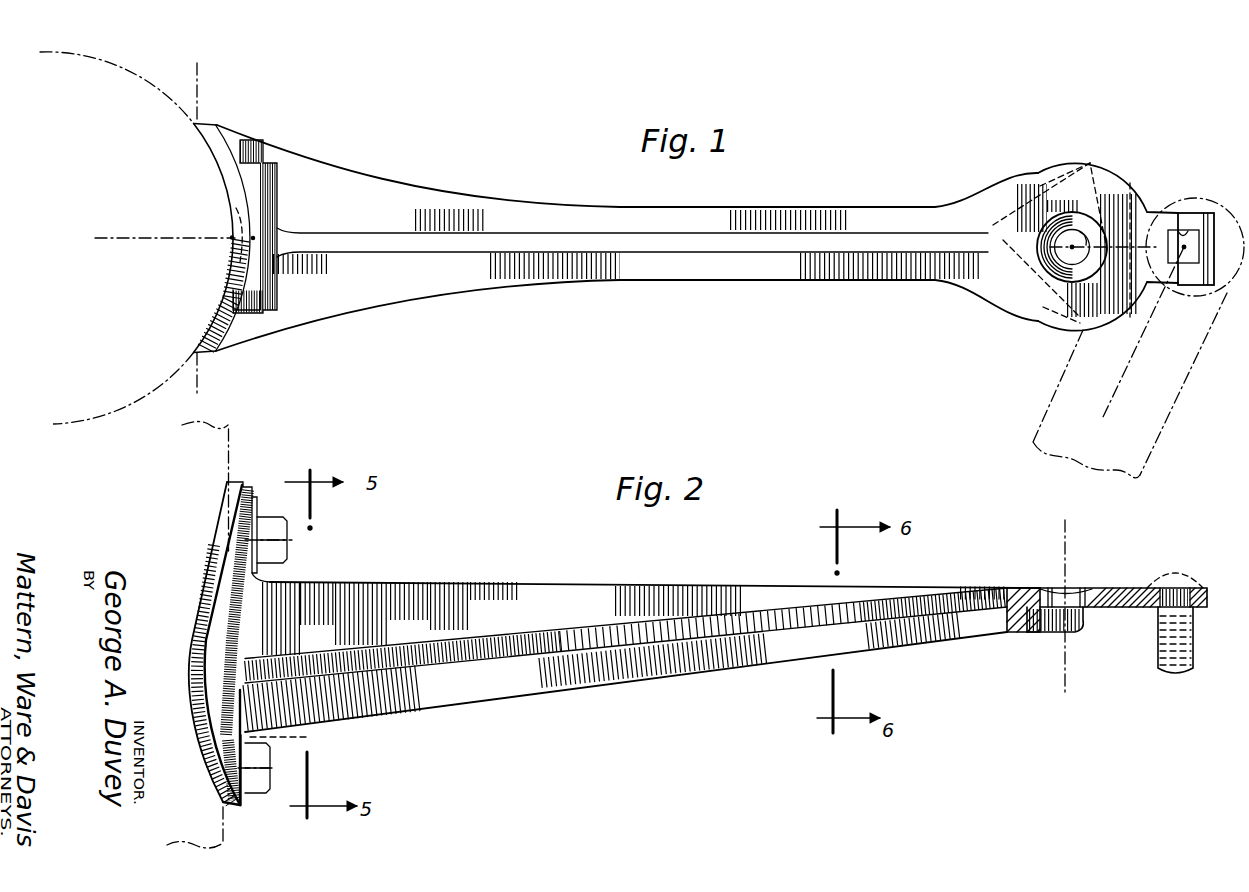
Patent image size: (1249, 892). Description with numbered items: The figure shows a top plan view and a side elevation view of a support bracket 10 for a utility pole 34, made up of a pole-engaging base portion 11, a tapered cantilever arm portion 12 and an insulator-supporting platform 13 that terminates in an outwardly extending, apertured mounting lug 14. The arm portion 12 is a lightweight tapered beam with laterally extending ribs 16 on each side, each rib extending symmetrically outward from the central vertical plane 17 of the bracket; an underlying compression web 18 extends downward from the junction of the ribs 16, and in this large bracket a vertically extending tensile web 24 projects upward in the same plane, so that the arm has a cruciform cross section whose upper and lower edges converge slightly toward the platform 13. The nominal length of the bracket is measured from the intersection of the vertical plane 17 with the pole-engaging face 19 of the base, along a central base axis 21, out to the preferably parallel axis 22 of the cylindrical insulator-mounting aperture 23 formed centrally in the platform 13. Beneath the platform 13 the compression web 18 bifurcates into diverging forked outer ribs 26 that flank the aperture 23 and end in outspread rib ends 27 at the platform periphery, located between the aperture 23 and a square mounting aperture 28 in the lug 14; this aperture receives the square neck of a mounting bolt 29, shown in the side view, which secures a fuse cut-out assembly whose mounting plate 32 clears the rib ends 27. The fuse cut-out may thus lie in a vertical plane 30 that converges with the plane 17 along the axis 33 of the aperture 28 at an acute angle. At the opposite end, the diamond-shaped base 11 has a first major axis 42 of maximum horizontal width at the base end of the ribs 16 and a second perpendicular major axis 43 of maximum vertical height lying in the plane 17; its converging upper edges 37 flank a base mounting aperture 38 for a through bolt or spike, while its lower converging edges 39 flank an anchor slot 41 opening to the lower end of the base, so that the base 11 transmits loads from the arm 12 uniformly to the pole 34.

In FIG. 1, the support bracket 10 is at (852, 197).
In FIG. 2, the support bracket 10 is at (477, 576).
In FIG. 1, the pole-engaging base portion 11 is at (242, 150).
In FIG. 2, the pole-engaging base portion 11 is at (208, 545).
In FIG. 1, the cantilever arm portion 12 is at (710, 286).
In FIG. 2, the cantilever arm portion 12 is at (757, 604).
In FIG. 1, the insulator-supporting platform 13 is at (1140, 180).
In FIG. 1, the mounting lug 14 is at (1220, 221).
In FIG. 2, the mounting lug 14 is at (1213, 602).
In FIG. 1, the laterally extending ribs 16 is at (383, 193).
In FIG. 2, the laterally extending ribs 16 is at (532, 640).
In FIG. 1, the central vertical plane 17 is at (106, 232).
In FIG. 2, the compression web 18 is at (482, 690).
In FIG. 1, the pole-engaging face 19 is at (218, 176).
In FIG. 2, the pole-engaging face 19 is at (224, 510).
In FIG. 1, the central base axis 21 is at (232, 239).
In FIG. 2, the central base axis 21 is at (240, 439).
In FIG. 1, the axis of insulator-mounting aperture 22 is at (1068, 252).
In FIG. 2, the axis of insulator-mounting aperture 22 is at (1061, 537).
In FIG. 1, the insulator-mounting aperture 23 is at (1078, 242).
In FIG. 2, the insulator-mounting aperture 23 is at (1080, 630).
In FIG. 1, the tensile web 24 is at (560, 234).
In FIG. 2, the tensile web 24 is at (602, 600).
In FIG. 1, the forked outer ribs 26 is at (1043, 183).
In FIG. 2, the forked outer ribs 26 is at (1040, 625).
In FIG. 1, the rib ends 27 is at (1093, 168).
In FIG. 2, the rib ends 27 is at (1086, 623).
In FIG. 1, the mounting aperture 28 is at (1185, 230).
In FIG. 2, the mounting aperture 28 is at (1183, 593).
In FIG. 2, the mounting bolt 29 is at (1158, 660).
In FIG. 1, the vertical plane 30 is at (1124, 395).
In FIG. 1, the fuse cut-out assembly mounting plate 32 is at (1035, 428).
In FIG. 1, the axis of mounting aperture 33 is at (1184, 252).
In FIG. 1, the utility pole 34 is at (137, 76).
In FIG. 2, the utility pole 34 is at (236, 420).
In FIG. 1, the converging upper edges 37 is at (213, 322).
In FIG. 2, the converging upper edges 37 is at (210, 573).
In FIG. 1, the base mounting aperture 38 is at (240, 218).
In FIG. 2, the base mounting aperture 38 is at (254, 492).
In FIG. 2, the lower converging edges 39 is at (213, 782).
In FIG. 2, the anchor slot 41 is at (293, 737).
In FIG. 1, the first major axis 42 is at (203, 88).
In FIG. 2, the first major axis 42 is at (188, 682).
In FIG. 1, the second major axis 43 is at (232, 237).